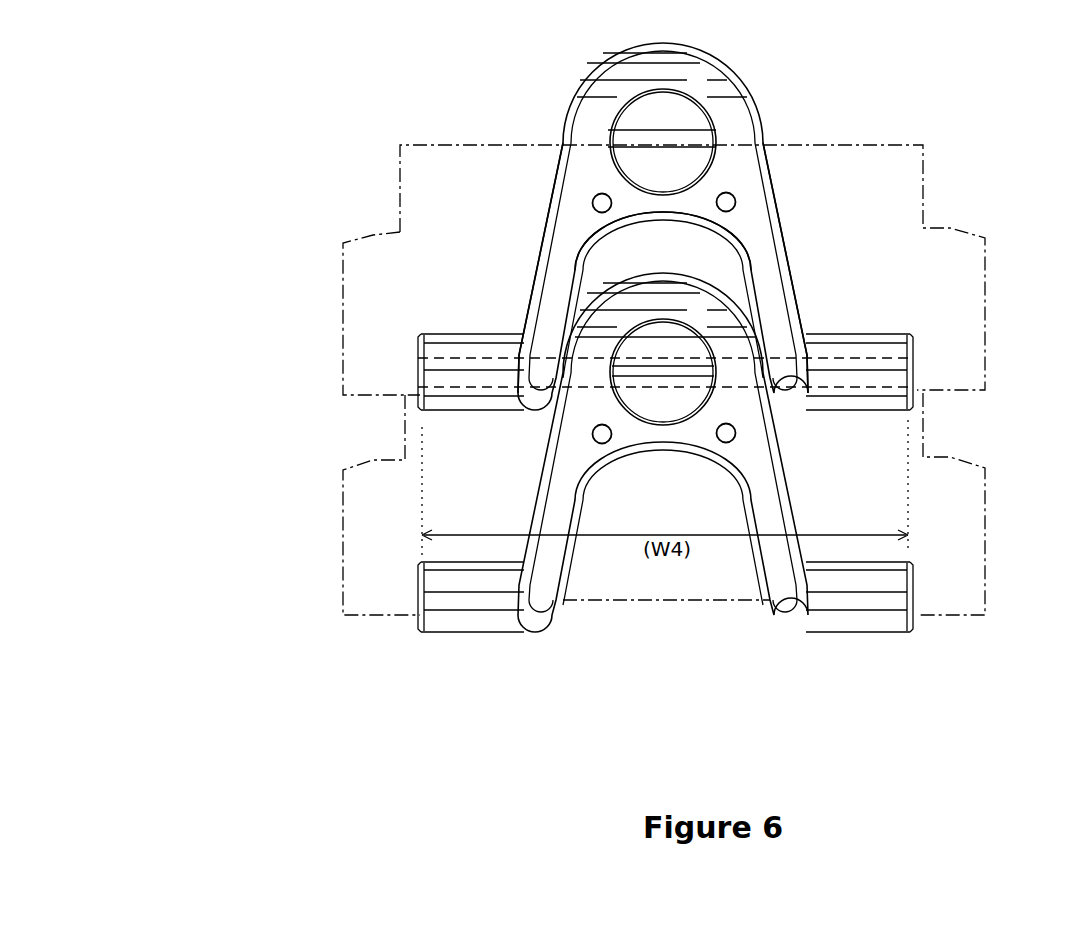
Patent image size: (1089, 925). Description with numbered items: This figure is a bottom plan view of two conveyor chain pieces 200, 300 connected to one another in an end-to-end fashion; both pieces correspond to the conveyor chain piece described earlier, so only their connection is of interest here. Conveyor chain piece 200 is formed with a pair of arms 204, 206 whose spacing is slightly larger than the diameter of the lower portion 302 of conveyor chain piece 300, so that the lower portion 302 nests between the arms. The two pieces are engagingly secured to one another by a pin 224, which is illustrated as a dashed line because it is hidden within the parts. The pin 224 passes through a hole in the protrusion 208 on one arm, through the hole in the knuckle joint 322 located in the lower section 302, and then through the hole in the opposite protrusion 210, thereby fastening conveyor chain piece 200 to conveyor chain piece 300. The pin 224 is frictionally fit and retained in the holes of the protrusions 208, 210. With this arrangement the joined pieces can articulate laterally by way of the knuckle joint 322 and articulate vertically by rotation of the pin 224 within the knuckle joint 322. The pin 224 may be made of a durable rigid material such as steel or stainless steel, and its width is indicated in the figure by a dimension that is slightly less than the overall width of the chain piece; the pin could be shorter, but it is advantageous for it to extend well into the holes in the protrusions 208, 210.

The conveyor chain piece 200 is at (251, 151).
The arm 204 is at (560, 268).
The arm 206 is at (768, 268).
The protrusion 208 is at (428, 348).
The protrusion 210 is at (895, 350).
The pin 224 is at (477, 360).
The conveyor chain piece 300 is at (251, 469).
The lower portion 302 is at (612, 287).
The knuckle joint 322 is at (660, 402).